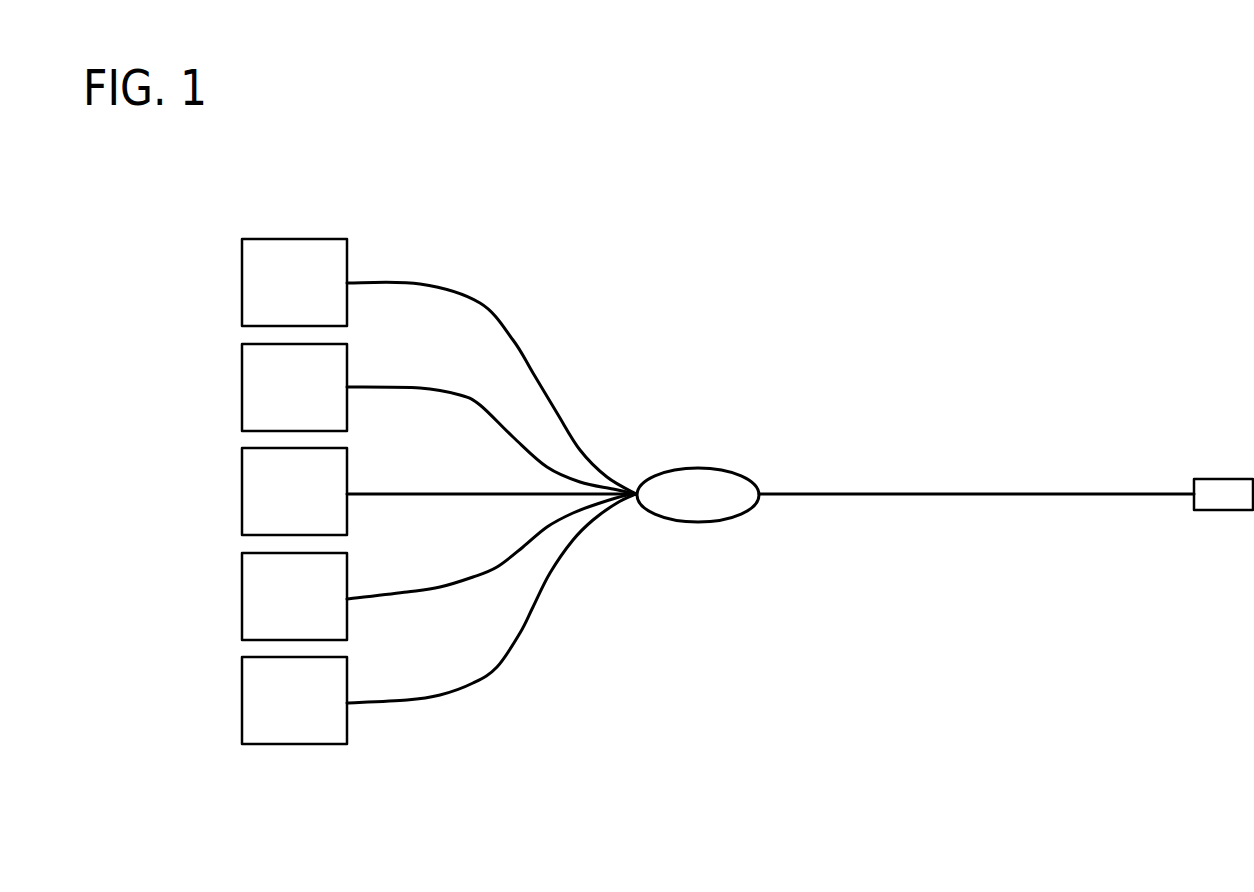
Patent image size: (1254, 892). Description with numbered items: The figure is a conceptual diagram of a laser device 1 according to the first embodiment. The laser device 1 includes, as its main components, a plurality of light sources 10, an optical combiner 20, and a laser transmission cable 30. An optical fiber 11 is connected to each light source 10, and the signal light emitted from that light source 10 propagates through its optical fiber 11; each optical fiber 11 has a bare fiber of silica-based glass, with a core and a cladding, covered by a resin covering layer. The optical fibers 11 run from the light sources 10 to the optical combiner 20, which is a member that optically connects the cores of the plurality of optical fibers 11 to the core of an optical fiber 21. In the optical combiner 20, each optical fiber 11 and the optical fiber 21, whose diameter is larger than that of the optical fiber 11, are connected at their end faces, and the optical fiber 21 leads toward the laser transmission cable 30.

The laser device 1 is at (1125, 201).
The light source 10 is at (242, 280).
The optical fiber 11 is at (437, 288).
The optical combiner 20 is at (700, 468).
The optical fiber 21 is at (935, 493).
The laser transmission cable 30 is at (1180, 426).